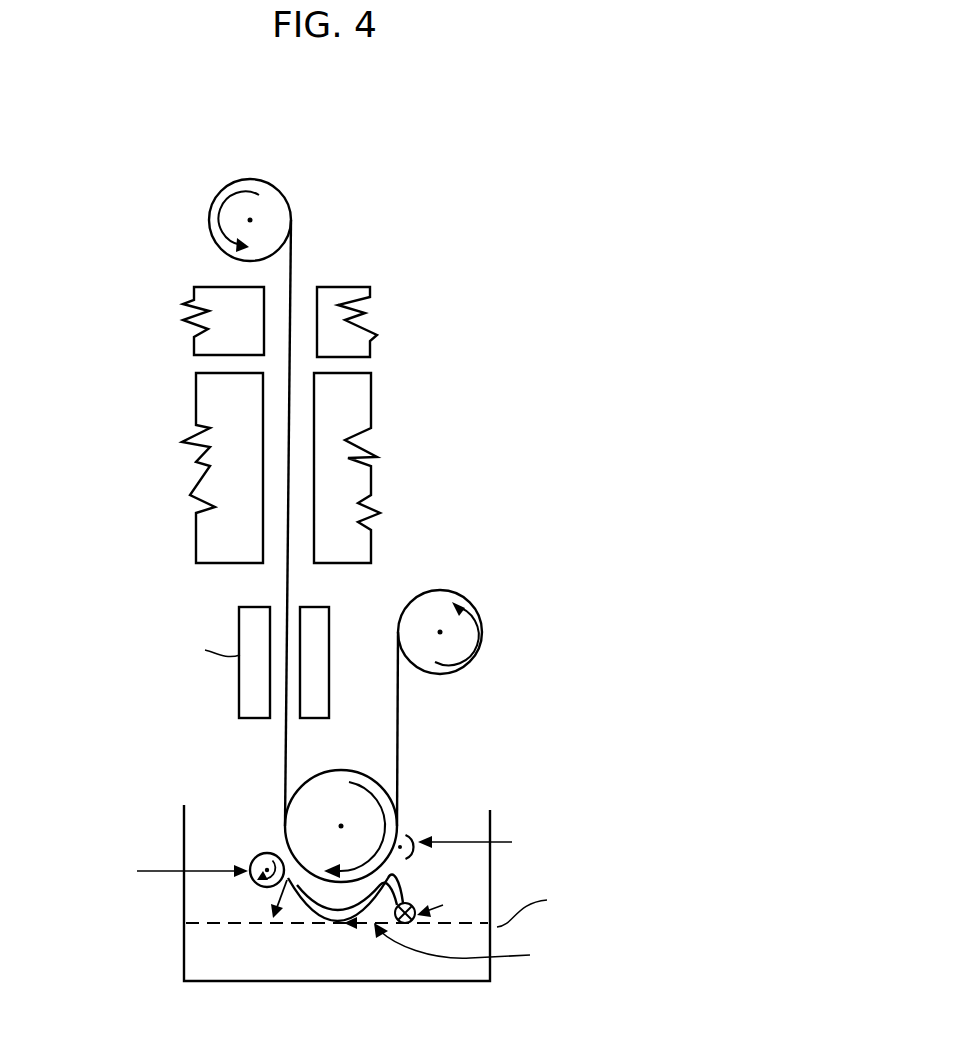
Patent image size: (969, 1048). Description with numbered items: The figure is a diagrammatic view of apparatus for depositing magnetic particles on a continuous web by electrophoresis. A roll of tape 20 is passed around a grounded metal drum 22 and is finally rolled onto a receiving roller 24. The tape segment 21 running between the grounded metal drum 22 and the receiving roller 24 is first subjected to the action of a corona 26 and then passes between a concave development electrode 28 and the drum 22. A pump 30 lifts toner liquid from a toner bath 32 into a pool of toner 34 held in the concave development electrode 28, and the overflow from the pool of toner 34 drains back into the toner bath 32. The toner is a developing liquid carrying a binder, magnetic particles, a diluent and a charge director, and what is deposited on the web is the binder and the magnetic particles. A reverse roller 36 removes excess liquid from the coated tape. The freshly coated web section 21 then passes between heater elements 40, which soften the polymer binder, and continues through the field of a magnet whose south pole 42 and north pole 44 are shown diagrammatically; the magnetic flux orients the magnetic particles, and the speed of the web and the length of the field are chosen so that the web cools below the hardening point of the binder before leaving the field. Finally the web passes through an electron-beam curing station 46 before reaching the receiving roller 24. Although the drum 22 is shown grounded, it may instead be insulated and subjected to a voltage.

The roll of tape 20 is at (457, 590).
The tape segment 21 is at (288, 578).
The grounded metal drum 22 is at (330, 767).
The receiving roller 24 is at (272, 202).
The corona 26 is at (407, 865).
The development electrode 28 is at (313, 918).
The pump 30 is at (408, 924).
The toner bath 32 is at (190, 943).
The pool of toner 34 is at (342, 900).
The reverse roller 36 is at (262, 853).
The heater elements 40 is at (252, 693).
The south pole 42 is at (208, 402).
The north pole 44 is at (360, 533).
The electron-beam curing station 46 is at (225, 309).